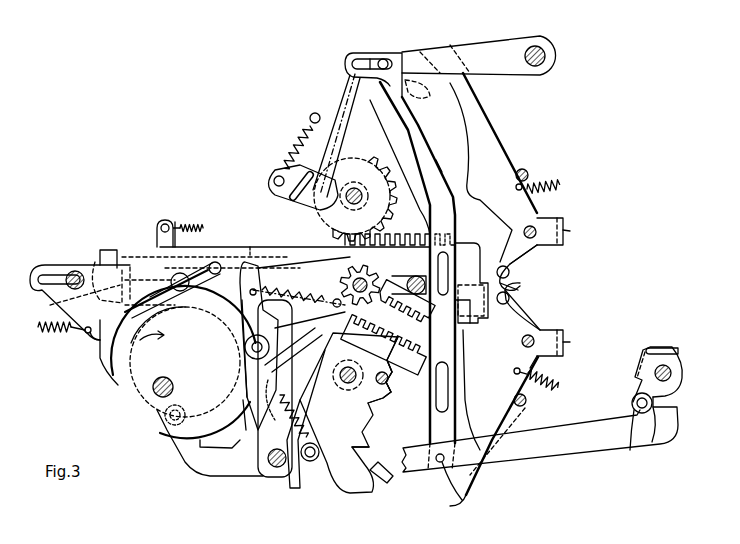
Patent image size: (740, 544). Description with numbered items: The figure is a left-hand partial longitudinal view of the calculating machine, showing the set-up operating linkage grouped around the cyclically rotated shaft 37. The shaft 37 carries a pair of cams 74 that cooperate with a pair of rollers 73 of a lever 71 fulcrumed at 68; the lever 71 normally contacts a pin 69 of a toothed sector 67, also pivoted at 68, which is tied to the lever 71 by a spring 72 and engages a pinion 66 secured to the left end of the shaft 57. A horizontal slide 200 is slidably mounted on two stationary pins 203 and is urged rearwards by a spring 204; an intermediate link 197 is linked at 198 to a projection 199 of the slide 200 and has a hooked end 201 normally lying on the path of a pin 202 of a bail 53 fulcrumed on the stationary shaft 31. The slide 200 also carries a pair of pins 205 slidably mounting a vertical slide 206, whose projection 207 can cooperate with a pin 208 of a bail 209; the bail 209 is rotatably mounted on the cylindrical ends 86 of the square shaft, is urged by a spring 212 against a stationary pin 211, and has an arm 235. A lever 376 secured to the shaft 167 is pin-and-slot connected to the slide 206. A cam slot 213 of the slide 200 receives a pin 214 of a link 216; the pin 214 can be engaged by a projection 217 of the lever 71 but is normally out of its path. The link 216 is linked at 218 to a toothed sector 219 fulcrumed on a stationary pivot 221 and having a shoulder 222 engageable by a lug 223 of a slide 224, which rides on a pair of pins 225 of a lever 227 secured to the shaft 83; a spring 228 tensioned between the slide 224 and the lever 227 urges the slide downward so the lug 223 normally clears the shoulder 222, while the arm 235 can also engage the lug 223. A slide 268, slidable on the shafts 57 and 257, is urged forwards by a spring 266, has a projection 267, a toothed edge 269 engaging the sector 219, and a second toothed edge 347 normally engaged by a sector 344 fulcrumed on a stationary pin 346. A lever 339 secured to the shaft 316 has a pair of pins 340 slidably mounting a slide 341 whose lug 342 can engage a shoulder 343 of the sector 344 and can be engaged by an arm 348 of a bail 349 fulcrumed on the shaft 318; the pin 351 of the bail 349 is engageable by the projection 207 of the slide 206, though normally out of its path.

The stationary shaft 31 is at (668, 360).
The shaft 37 is at (152, 393).
The bail 53 is at (641, 356).
The shaft 57 is at (360, 270).
The pinion 66 is at (378, 275).
The toothed sector 67 is at (244, 414).
The fulcrum 68 is at (268, 466).
The pin 69 is at (257, 335).
The lever 71 is at (246, 340).
The spring 72 is at (305, 298).
The rollers 73 is at (246, 360).
The cams 74 is at (106, 372).
The shaft 83 is at (347, 385).
The cylindrical ends 86 is at (536, 362).
The shaft 167 is at (546, 56).
The intermediate member or link 197 is at (560, 448).
The link pivot 198 is at (466, 486).
The projection 199 is at (466, 412).
The horizontal slide 200 is at (292, 247).
The hooked end 201 is at (658, 442).
The pin 202 is at (630, 450).
The stationary pins 203 is at (414, 276).
The spring 204 is at (52, 337).
The pins 205 is at (470, 240).
The vertical slide 206 is at (412, 130).
The projection 207 is at (510, 286).
The pin 208 is at (512, 298).
The bail 209 is at (566, 338).
The stationary pin 211 is at (526, 404).
The spring 212 is at (560, 390).
The cam slot 213 is at (155, 297).
The pin 214 is at (215, 262).
The link 216 is at (243, 262).
The projection 217 is at (250, 247).
The link pivot 218 is at (392, 393).
The toothed sector 219 is at (386, 366).
The stationary pivot 221 is at (384, 386).
The shoulder 222 is at (366, 450).
The lug 223 is at (392, 480).
The slide 224 is at (366, 486).
The pins 225 is at (257, 386).
The lever 227 is at (298, 425).
The spring 228 is at (305, 462).
The arm 235 is at (484, 470).
The shaft 257 is at (176, 275).
The spring 266 is at (178, 222).
The projection 267 is at (100, 252).
The slide 268 is at (484, 255).
The toothed edge 269 is at (462, 322).
The shaft 316 is at (348, 192).
The shaft 318 is at (545, 218).
The lever 339 is at (325, 205).
The pins 340 is at (310, 120).
The slide 341 is at (352, 72).
The lug 342 is at (408, 86).
The shoulder 343 is at (345, 98).
The sector 344 is at (432, 166).
The stationary pin 346 is at (292, 154).
The second toothed edge 347 is at (392, 236).
The arm 348 is at (478, 97).
The bail 349 is at (566, 232).
The pin 351 is at (512, 272).
The lever 376 is at (460, 48).